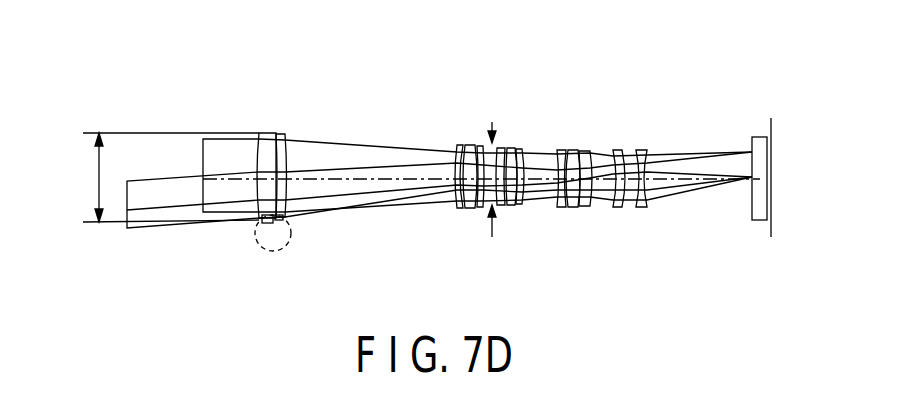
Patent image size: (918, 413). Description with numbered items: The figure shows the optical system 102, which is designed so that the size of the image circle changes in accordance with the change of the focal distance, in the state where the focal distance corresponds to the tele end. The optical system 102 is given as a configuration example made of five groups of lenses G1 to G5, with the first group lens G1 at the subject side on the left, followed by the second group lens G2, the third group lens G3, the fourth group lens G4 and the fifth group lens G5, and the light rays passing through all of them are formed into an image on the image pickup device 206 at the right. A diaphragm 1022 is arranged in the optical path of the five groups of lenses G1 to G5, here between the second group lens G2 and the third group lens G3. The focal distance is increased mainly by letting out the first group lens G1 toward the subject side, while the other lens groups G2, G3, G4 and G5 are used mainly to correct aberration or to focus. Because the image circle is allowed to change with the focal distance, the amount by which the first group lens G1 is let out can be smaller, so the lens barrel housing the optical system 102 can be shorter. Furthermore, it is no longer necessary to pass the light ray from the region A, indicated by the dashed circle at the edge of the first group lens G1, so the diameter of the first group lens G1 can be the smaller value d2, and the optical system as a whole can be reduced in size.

The optical system 102 is at (502, 130).
The diaphragm 1022 is at (492, 122).
The image pickup device 206 is at (758, 128).
The first group lens G1 is at (284, 134).
The second group lens G2 is at (485, 143).
The third group lens G3 is at (532, 143).
The fourth group lens G4 is at (593, 145).
The fifth group lens G5 is at (630, 154).
The diameter of first group lens d2 is at (87, 177).
The region of first group lens A is at (273, 251).